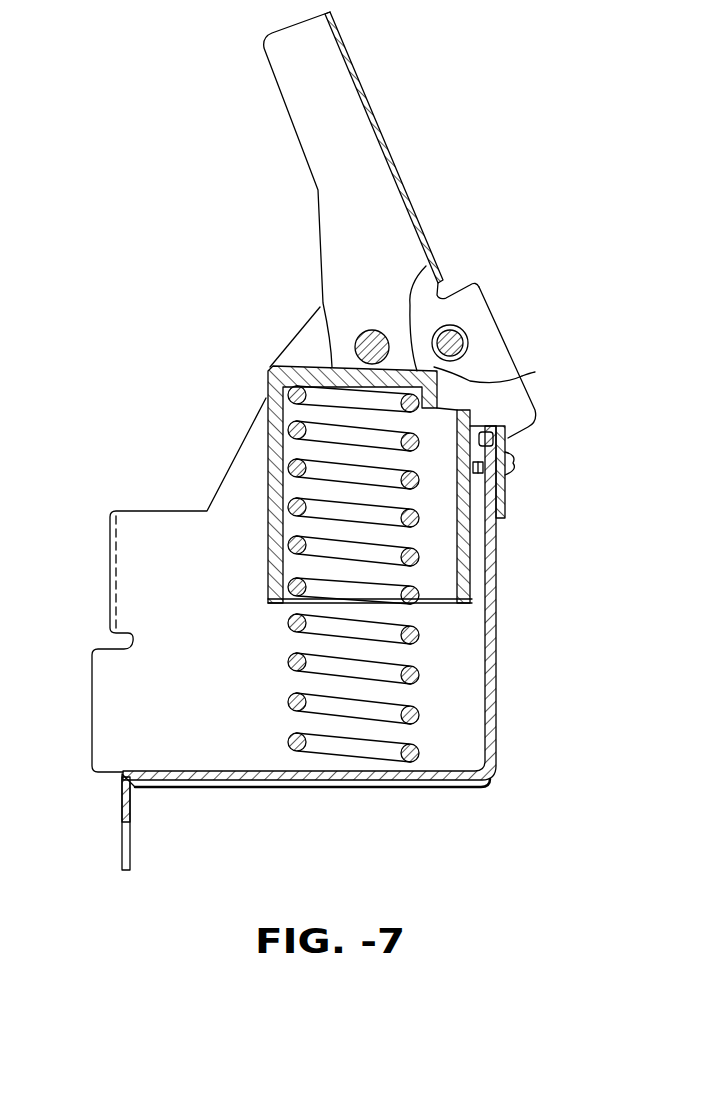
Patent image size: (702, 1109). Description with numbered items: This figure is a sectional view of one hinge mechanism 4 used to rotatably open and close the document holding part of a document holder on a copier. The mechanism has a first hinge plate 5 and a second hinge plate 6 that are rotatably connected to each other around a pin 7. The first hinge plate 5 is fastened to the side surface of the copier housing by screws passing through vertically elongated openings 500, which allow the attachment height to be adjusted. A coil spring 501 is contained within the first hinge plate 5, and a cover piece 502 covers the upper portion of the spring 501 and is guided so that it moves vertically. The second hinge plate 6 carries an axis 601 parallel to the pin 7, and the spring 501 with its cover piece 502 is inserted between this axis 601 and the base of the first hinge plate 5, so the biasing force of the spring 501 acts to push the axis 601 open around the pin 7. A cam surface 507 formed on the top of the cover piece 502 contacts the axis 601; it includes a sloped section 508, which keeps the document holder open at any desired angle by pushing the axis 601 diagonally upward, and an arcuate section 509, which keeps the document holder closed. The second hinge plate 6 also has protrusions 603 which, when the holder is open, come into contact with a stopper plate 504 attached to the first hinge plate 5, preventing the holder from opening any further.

The hinge mechanism 4 is at (512, 336).
The first hinge plate 5 is at (497, 733).
The second hinge plate 6 is at (380, 130).
The pin 7 is at (467, 333).
The vertically elongated openings 500 is at (123, 838).
The coil spring 501 is at (420, 677).
The cover piece 502 is at (470, 556).
The stopper plate 504 is at (503, 503).
The cam surface 507 is at (302, 367).
The sloped section 508 is at (410, 302).
The arcuate section 509 is at (520, 378).
The axis 601 is at (345, 325).
The protrusions 603 is at (527, 417).